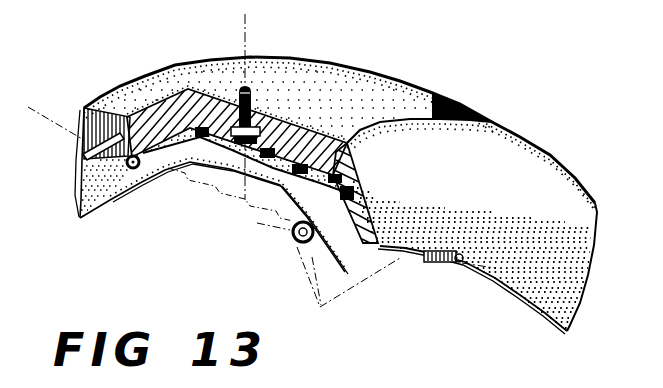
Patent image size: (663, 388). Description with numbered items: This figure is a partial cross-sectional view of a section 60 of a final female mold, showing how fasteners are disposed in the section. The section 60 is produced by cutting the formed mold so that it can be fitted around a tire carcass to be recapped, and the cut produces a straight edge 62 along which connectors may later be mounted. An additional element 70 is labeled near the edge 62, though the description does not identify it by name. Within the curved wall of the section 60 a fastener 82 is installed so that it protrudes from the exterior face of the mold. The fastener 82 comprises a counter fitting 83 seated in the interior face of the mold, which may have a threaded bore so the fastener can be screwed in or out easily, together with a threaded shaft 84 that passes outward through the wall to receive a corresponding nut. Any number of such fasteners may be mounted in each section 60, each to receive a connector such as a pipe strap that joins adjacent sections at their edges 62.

The section 60 is at (205, 78).
The edge 62 is at (100, 107).
The pivot pin 70 is at (80, 150).
The fastener 82 is at (252, 97).
The counter fitting 83 is at (236, 150).
The threaded shaft 84 is at (247, 85).